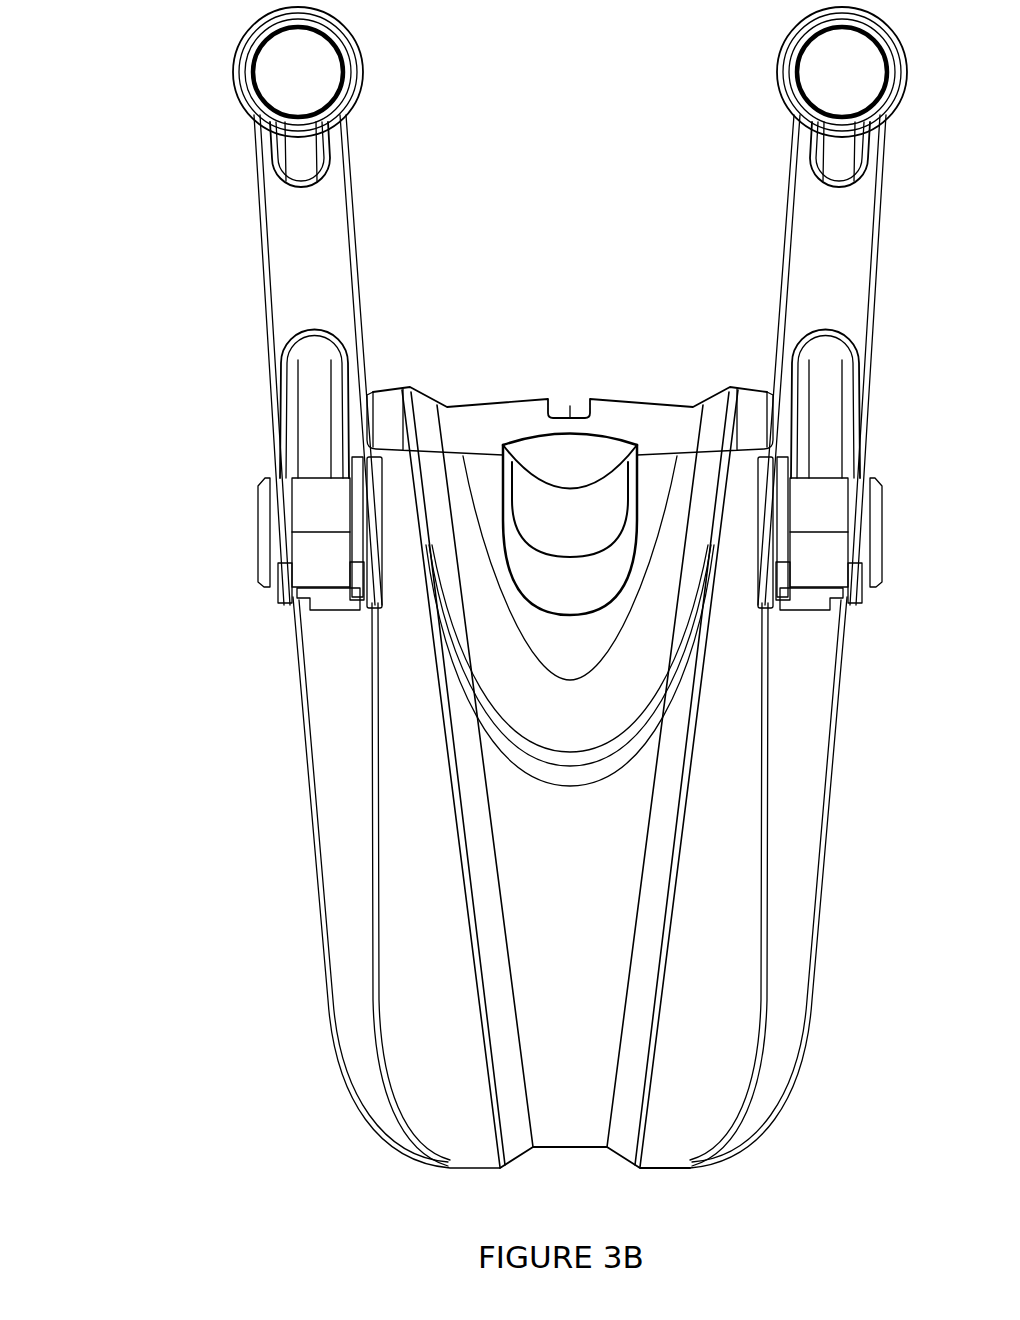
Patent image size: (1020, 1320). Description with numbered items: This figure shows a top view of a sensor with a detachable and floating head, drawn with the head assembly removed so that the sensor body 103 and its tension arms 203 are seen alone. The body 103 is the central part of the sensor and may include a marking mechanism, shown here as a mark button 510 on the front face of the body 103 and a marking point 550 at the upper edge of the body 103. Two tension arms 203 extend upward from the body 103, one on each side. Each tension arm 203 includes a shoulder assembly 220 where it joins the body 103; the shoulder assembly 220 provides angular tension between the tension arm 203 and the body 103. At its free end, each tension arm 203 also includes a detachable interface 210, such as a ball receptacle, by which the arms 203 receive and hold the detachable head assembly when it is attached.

The detachable interface 210 is at (240, 58).
The tension arms 203 is at (307, 250).
The shoulder assembly 220 is at (267, 525).
The sensor body 103 is at (293, 652).
The marking point 550 is at (573, 390).
The mark button 510 is at (548, 541).